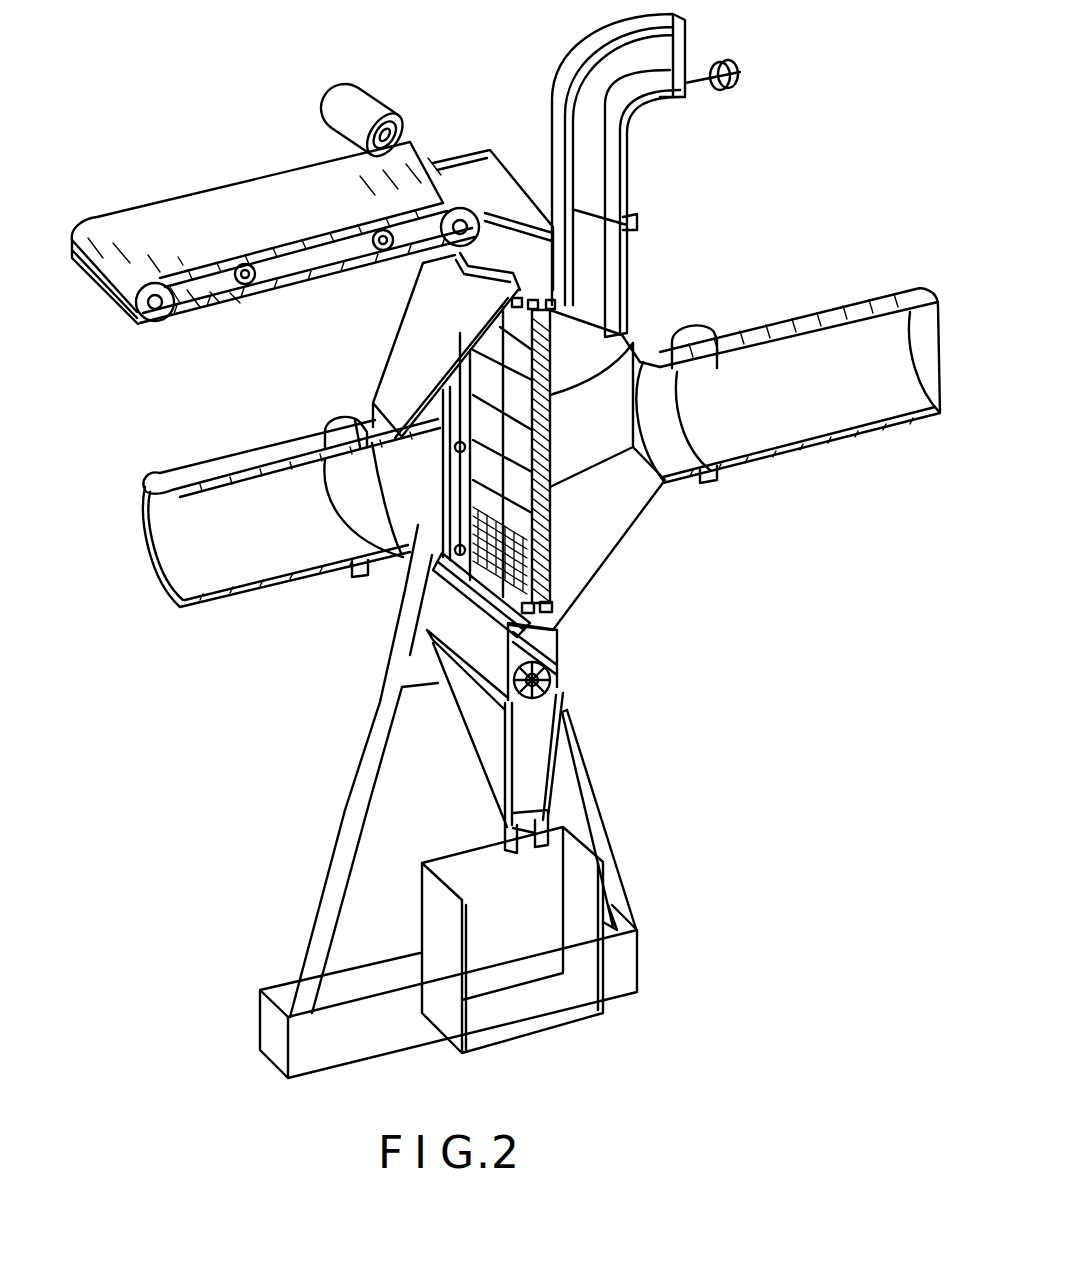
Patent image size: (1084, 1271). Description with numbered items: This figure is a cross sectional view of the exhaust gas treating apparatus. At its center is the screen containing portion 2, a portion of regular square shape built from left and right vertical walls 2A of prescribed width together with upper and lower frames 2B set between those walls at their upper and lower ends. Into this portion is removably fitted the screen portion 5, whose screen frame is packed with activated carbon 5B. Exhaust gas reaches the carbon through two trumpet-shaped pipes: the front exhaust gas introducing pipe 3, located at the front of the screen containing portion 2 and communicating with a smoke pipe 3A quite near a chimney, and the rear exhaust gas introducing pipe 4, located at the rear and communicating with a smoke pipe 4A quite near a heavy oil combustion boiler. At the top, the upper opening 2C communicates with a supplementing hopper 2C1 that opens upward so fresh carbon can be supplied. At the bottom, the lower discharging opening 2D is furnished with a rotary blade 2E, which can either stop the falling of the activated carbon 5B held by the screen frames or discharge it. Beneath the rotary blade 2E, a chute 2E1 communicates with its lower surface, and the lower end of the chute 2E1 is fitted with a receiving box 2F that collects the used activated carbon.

The screen containing portion 2 is at (633, 340).
The vertical walls 2A is at (445, 495).
The upper and lower frames 2B is at (462, 582).
The upper opening 2C is at (503, 280).
The supplementing hopper 2C1 is at (463, 173).
The lower discharging opening 2D is at (557, 640).
The rotary blade 2E is at (560, 690).
The chute 2E1 is at (477, 730).
The receiving box 2F is at (530, 1013).
The front exhaust gas introducing pipe 3 is at (602, 533).
The smoke pipe 3A is at (827, 317).
The rear exhaust gas introducing pipe 4 is at (413, 343).
The smoke pipe 4A is at (240, 463).
The screen portion 5 is at (543, 490).
The activated carbon 5B is at (543, 547).